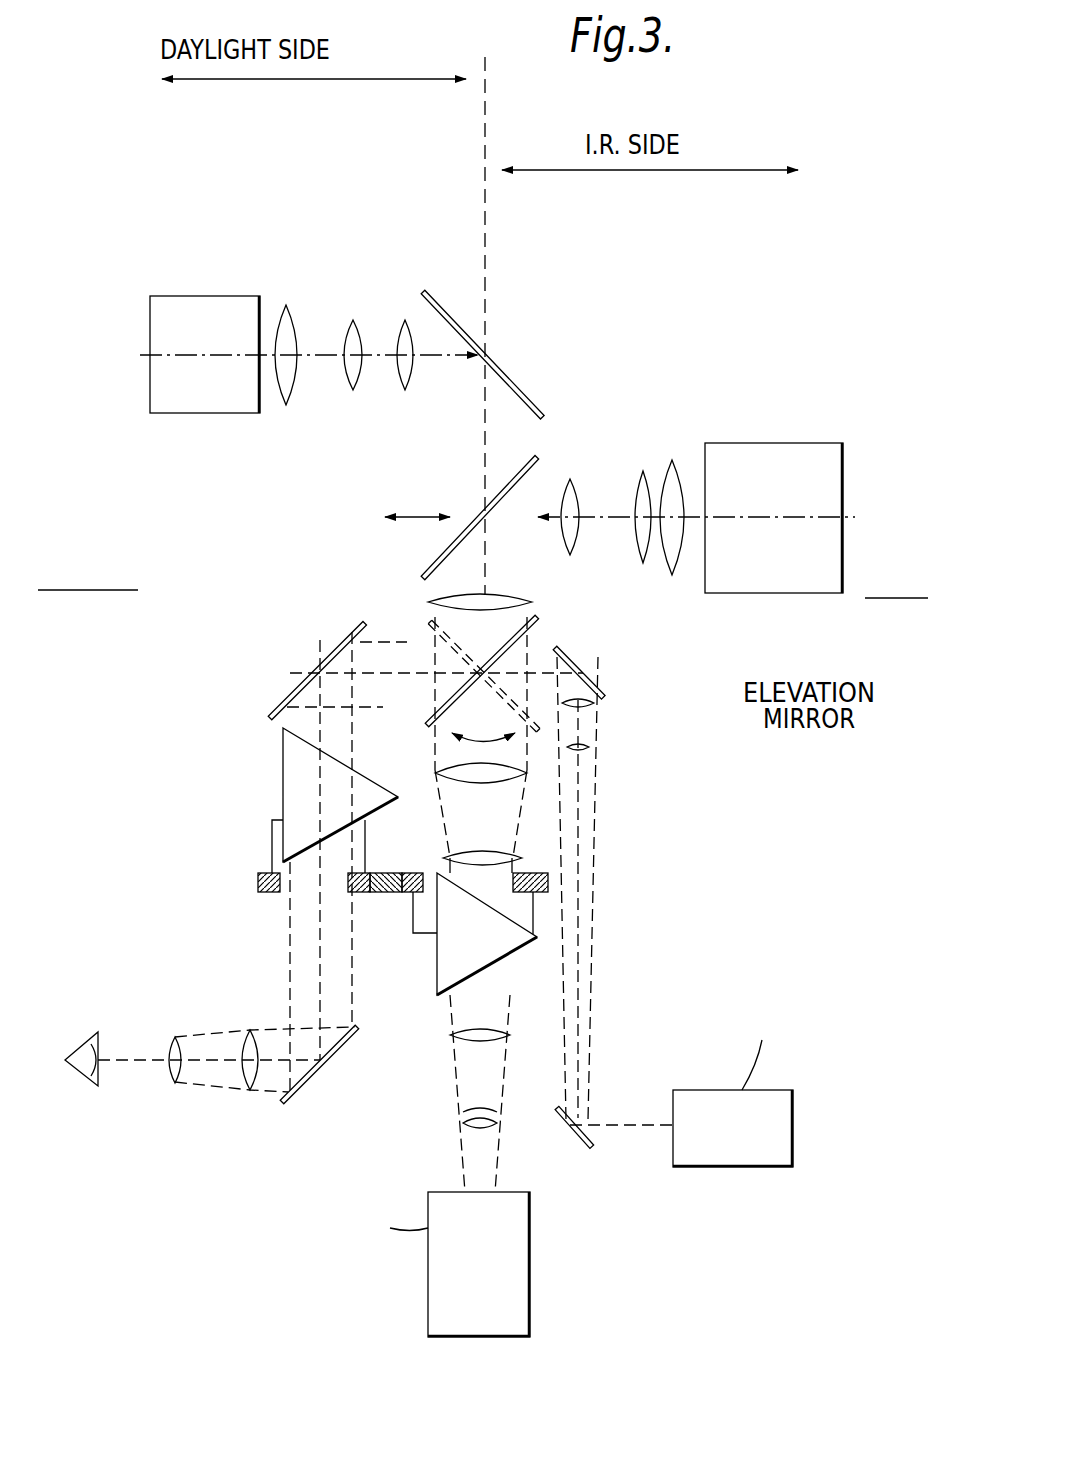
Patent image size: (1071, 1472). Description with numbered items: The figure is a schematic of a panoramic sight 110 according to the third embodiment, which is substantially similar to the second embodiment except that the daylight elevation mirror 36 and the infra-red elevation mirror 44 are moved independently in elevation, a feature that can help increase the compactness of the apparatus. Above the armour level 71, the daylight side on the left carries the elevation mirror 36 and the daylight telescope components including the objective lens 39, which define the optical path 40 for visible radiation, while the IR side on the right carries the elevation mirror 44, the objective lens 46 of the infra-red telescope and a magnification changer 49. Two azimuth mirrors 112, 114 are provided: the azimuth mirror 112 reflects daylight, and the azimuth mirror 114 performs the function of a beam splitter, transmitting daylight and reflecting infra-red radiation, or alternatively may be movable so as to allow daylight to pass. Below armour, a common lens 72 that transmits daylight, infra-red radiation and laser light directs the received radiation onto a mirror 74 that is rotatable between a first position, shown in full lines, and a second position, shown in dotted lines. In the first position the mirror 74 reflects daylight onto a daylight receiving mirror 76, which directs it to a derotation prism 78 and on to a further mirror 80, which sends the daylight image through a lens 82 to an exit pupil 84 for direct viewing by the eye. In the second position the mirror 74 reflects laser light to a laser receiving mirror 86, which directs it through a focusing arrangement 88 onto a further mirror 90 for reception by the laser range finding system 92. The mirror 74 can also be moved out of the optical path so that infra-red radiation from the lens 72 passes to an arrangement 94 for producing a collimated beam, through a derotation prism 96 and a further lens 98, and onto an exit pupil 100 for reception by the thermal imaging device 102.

The elevation mirror 36 is at (236, 441).
The objective lens 39 is at (285, 305).
The optical path 40 is at (406, 311).
The elevation mirror 44 is at (803, 604).
The objective lens 46 is at (673, 470).
The magnification changer 49 is at (643, 456).
The armour level 71 is at (103, 590).
The lens 72 is at (530, 603).
The mirror 74 is at (537, 622).
The daylight receiving mirror 76 is at (268, 703).
The derotation prism 78 is at (338, 804).
The further mirror 80 is at (313, 1075).
The lens 82 is at (245, 1075).
The exit pupil 84 is at (166, 1086).
The laser receiving mirror 86 is at (591, 686).
The focusing arrangement 88 is at (606, 695).
The further mirror 90 is at (579, 1120).
The laser range finding system 92 is at (746, 1144).
The arrangement for producing a collimated beam 94 is at (529, 763).
The derotation prism 96 is at (488, 946).
The further lens 98 is at (480, 1037).
The exit pupil 100 is at (498, 1130).
The thermal imaging device 102 is at (497, 1273).
The panoramic sight 110 is at (153, 230).
The azimuth mirror 112 is at (486, 353).
The azimuth mirror 114 is at (537, 455).